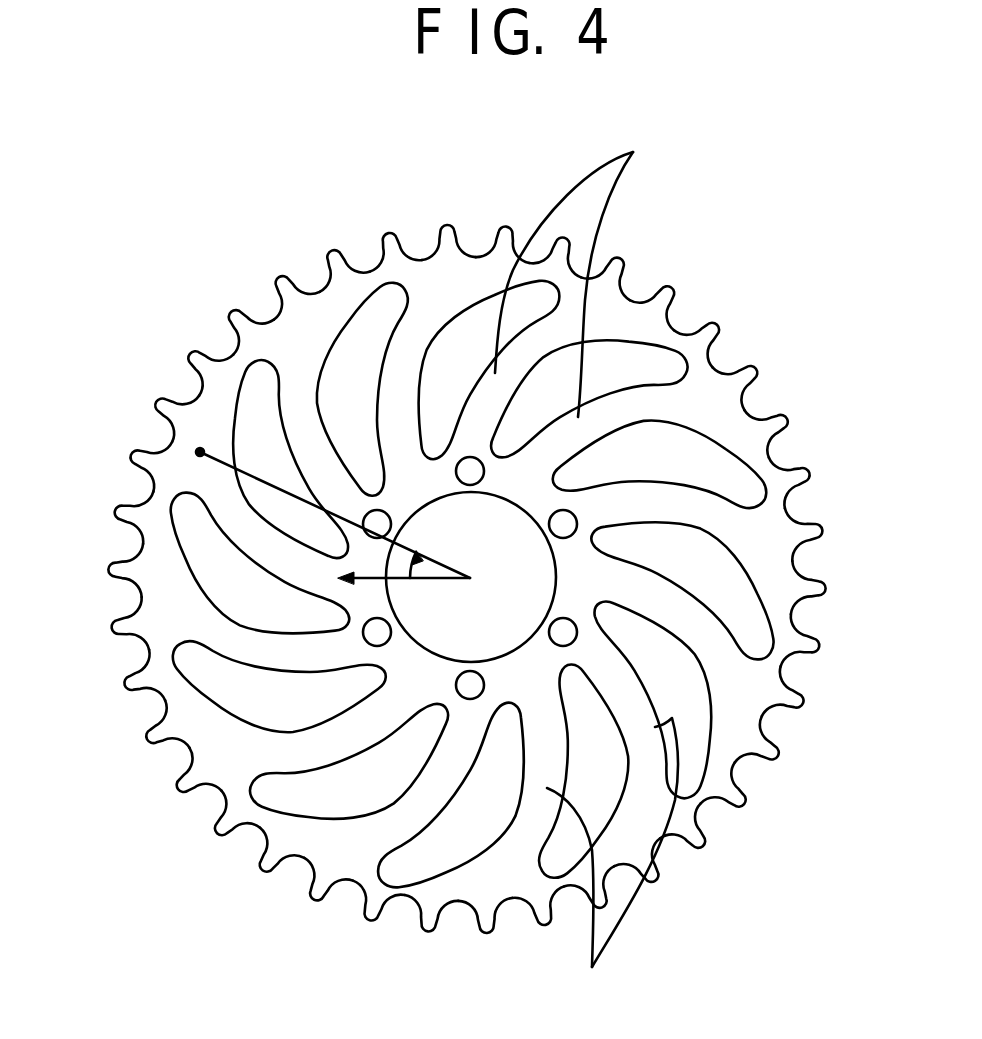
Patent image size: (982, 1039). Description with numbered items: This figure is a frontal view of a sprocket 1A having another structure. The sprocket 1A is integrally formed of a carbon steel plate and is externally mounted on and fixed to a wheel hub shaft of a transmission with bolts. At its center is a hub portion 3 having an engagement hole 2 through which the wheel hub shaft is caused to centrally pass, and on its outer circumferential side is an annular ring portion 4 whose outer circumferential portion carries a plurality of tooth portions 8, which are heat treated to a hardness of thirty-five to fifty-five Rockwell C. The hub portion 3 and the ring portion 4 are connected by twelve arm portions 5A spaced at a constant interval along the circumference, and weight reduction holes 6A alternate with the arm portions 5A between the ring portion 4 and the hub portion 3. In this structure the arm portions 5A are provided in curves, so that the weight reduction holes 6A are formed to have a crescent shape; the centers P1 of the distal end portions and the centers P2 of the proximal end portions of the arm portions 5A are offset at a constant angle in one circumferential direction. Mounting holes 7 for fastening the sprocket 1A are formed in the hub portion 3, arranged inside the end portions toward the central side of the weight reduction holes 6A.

The sprocket 1A is at (740, 240).
The engagement hole 2 is at (471, 577).
The hub portion 3 is at (415, 667).
The annular ring portion 4 is at (775, 543).
The arm portions 5A is at (591, 575).
The weight reduction holes 6A is at (366, 392).
The mounting holes 7 is at (553, 631).
The tooth portions 8 is at (793, 648).
The centers of the distal end portions P1 is at (200, 452).
The centers of the proximal end portions P2 is at (340, 580).